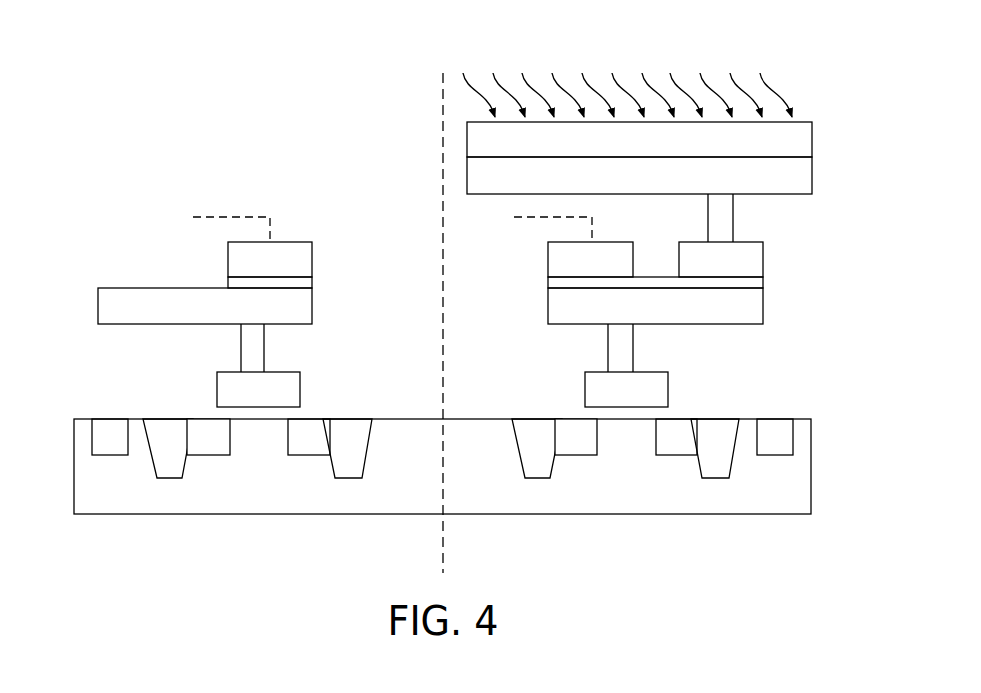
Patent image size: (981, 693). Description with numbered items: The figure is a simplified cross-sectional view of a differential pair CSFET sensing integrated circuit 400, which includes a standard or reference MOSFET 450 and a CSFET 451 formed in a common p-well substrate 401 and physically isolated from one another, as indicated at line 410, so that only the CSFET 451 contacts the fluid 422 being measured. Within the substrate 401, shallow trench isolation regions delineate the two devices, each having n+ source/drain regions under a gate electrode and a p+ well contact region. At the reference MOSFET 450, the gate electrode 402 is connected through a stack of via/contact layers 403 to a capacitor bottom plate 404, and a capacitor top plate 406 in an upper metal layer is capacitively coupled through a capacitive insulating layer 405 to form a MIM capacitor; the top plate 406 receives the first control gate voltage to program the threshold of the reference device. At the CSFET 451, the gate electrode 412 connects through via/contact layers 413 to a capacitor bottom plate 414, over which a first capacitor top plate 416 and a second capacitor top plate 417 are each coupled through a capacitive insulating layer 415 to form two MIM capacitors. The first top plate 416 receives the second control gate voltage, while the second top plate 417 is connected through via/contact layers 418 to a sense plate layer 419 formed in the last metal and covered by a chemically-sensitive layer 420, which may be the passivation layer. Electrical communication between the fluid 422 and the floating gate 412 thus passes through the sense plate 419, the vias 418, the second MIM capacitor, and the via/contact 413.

The differential pair CSFET sensing integrated circuit 400 is at (145, 59).
The substrate 401 is at (769, 507).
The gate electrode 402 is at (300, 388).
The via/contact layers 403 is at (264, 342).
The capacitor bottom plate 404 is at (312, 306).
The capacitive insulating layer 405 is at (312, 283).
The capacitor top plate 406 is at (312, 259).
The line 410 is at (443, 289).
The gate electrode 412 is at (668, 388).
The via/contact layers 413 is at (633, 342).
The capacitor bottom plate 414 is at (763, 306).
The capacitive insulating layer 415 is at (763, 283).
The first capacitor top plate 416 is at (548, 260).
The second capacitor top plate 417 is at (763, 259).
The via/contact layers 418 is at (733, 211).
The sense plate layer 419 is at (778, 186).
The chemically-sensitive layer 420 is at (724, 150).
The fluid 422 is at (652, 69).
The reference MOSFET 450 is at (280, 571).
The CSFET 451 is at (649, 571).